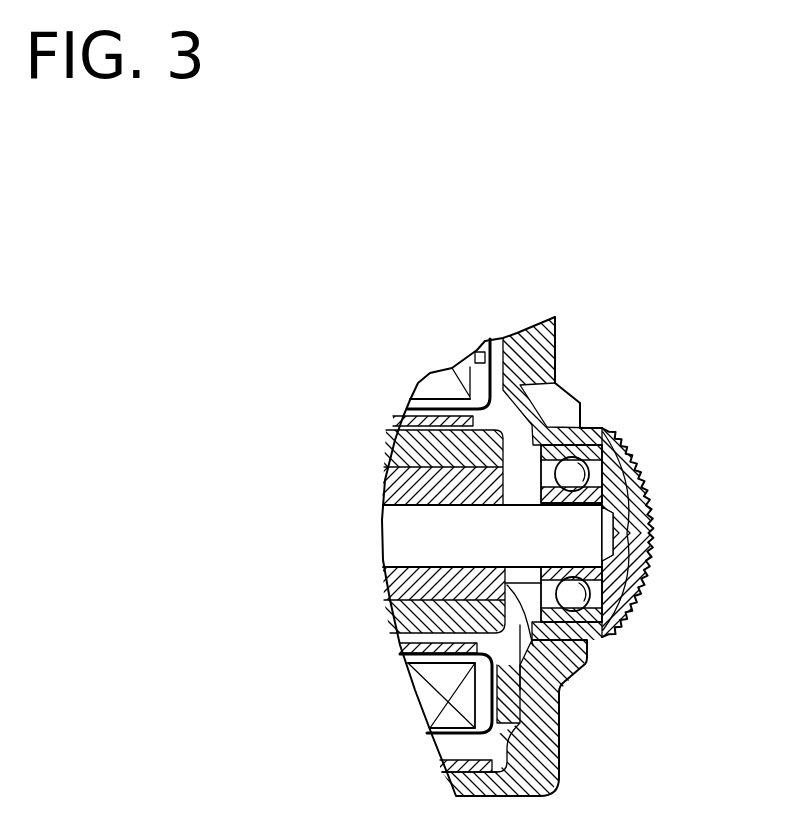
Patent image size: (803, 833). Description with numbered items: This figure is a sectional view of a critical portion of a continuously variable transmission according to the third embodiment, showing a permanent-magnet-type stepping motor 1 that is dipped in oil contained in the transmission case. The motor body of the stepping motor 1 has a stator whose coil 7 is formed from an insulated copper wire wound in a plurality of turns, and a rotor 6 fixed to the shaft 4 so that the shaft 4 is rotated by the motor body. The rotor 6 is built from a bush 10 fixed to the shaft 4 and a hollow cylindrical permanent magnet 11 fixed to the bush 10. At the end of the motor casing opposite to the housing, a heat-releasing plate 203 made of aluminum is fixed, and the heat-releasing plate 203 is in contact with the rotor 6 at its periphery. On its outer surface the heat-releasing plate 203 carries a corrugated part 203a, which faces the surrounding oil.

The stepping motor 1 is at (358, 542).
The shaft 4 is at (582, 537).
The rotor 6 is at (530, 473).
The coil 7 is at (457, 375).
The bush 10 is at (587, 662).
The permanent magnet 11 is at (563, 708).
The heat-releasing plate 203 is at (401, 555).
The corrugated part 203a is at (637, 599).